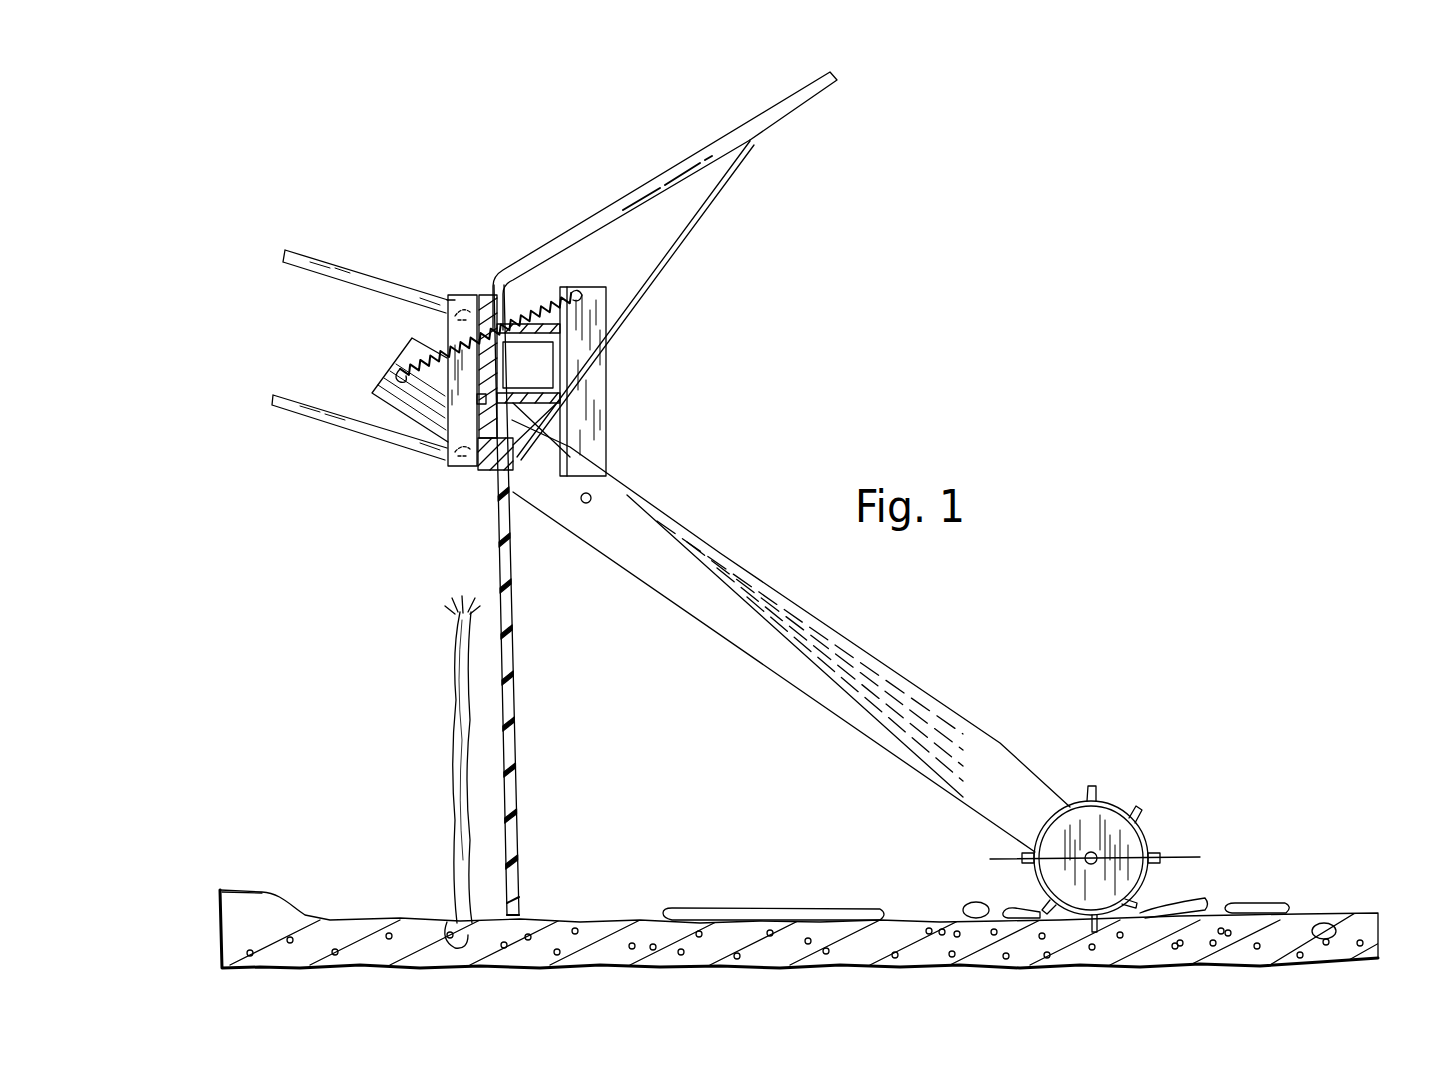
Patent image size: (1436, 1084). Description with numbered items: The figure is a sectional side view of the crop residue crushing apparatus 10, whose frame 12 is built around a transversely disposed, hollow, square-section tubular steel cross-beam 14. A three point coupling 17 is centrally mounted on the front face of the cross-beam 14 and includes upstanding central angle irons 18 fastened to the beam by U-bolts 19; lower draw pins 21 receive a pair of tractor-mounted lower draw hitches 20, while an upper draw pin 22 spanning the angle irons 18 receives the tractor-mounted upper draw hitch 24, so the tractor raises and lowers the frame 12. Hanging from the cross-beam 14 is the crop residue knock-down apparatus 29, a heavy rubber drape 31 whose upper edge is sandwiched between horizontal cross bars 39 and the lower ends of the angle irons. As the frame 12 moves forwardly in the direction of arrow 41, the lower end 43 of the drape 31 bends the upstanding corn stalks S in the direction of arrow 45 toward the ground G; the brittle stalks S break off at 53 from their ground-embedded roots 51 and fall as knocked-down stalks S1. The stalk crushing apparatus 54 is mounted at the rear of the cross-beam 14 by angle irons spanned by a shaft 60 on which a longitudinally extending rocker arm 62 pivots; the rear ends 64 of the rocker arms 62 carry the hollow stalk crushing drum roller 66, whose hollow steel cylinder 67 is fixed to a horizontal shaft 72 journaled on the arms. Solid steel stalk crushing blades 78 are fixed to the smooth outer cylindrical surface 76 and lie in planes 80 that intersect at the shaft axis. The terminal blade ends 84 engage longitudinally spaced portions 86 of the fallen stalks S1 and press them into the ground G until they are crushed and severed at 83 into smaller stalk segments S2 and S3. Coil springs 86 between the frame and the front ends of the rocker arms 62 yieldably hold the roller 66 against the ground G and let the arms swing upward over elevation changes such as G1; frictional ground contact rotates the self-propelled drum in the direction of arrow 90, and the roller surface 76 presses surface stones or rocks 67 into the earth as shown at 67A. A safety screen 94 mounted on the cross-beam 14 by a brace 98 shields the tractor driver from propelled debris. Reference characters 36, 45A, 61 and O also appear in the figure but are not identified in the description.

The crop residue crushing apparatus 10 is at (318, 470).
The frame 12 is at (280, 326).
The cross-beam 14 is at (548, 378).
The three point coupling 17 is at (318, 208).
The central angle irons 18 is at (487, 296).
The U-bolts 19 is at (543, 408).
The lower draw hitches 20 is at (314, 404).
The lower draw pins 21 is at (456, 310).
The upper draw pin 22 is at (460, 466).
The upper draw hitch 24 is at (386, 278).
The crop residue knock-down apparatus 29 is at (550, 580).
The drape 31 is at (521, 702).
The axle end 36 is at (1030, 852).
The horizontal cross bars 39 is at (513, 492).
The forward direction arrow 41 is at (348, 620).
The lower end of drape 43 is at (521, 906).
The stalk bending direction arrow 45 is at (418, 880).
The direction 45A is at (560, 848).
The roots 51 is at (444, 920).
The stalk break point 53 is at (460, 858).
The stalk crushing apparatus 54 is at (1131, 803).
The shaft 60 is at (592, 504).
The ground surface 61 is at (916, 905).
The rocker arm 62 is at (735, 620).
The rear ends of rocker arms 64 is at (1088, 788).
The stalk crushing drum roller 66 is at (1210, 781).
The hollow steel cylinder 67 is at (962, 912).
The embedded stone 67A is at (1325, 922).
The horizontal shaft 72 is at (1098, 856).
The outer cylindrical surface 76 is at (1047, 800).
The stalk crushing blades 78 is at (1107, 795).
The blade planes 80 is at (1198, 857).
The stalk severing location 83 is at (1082, 924).
The terminal blade ends 84 is at (1136, 810).
The coil springs 86 is at (540, 300).
The drum rotation arrow 90 is at (1008, 798).
The safety screen 94 is at (590, 218).
The brace 98 is at (654, 268).
The corn stalks S is at (462, 798).
The stake top O is at (453, 596).
The ground G is at (1380, 913).
The terrain elevation change G1 is at (246, 890).
The knocked-down stalks S1 is at (746, 908).
The smaller stalk segment S2 is at (1010, 906).
The smaller stalk segment S3 is at (1246, 903).